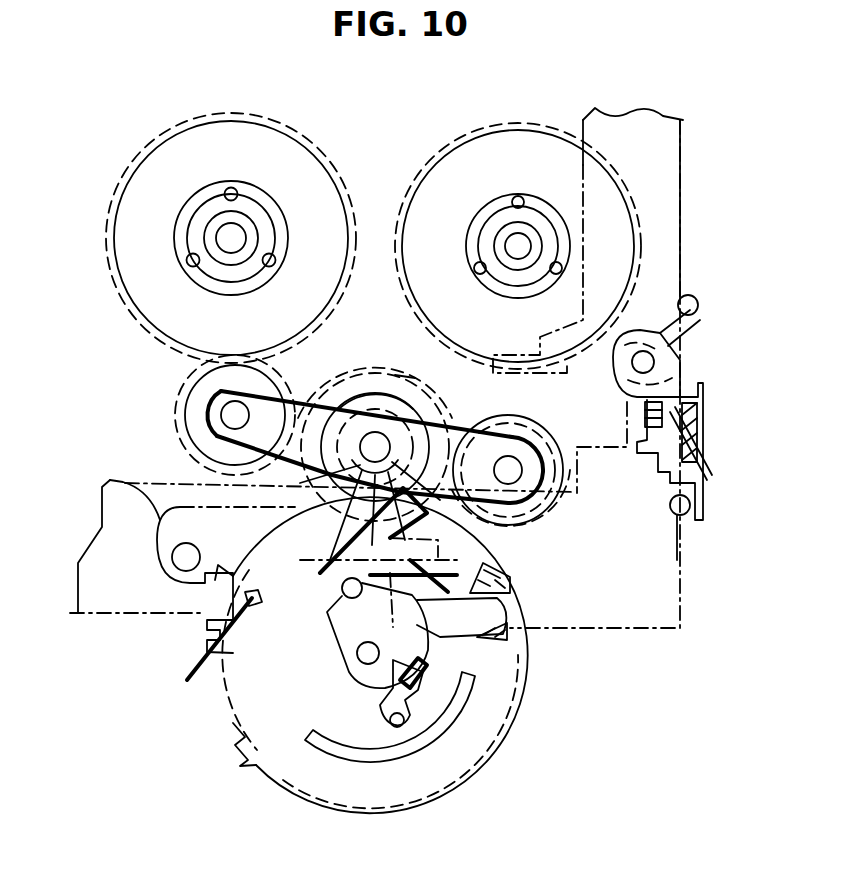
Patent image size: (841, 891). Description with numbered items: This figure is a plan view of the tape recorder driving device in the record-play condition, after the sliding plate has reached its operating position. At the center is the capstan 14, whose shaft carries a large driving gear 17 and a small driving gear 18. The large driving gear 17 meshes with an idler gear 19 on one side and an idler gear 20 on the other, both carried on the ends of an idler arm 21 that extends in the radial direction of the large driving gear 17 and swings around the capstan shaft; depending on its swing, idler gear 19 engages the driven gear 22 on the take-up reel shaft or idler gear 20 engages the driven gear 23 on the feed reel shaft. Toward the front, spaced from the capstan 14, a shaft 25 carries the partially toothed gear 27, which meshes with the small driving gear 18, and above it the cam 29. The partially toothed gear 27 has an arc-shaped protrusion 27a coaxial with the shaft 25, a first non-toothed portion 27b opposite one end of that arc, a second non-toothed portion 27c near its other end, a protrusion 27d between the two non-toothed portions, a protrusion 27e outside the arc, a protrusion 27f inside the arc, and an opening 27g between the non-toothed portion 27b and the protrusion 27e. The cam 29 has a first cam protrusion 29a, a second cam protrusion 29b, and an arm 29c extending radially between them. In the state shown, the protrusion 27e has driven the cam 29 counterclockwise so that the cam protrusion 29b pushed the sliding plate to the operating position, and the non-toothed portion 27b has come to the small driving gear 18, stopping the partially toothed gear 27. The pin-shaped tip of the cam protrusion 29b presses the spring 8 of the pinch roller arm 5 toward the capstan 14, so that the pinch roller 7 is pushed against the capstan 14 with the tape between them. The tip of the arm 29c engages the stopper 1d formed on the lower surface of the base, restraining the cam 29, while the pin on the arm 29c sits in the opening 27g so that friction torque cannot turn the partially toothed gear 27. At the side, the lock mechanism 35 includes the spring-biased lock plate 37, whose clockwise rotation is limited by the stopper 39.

The stopper 1d is at (517, 605).
The pinch roller arm 5 is at (130, 478).
The pinch roller 7 is at (500, 543).
The spring 8 is at (401, 614).
The capstan 14 is at (371, 432).
The large driving gear 17 is at (403, 377).
The small driving gear 18 is at (410, 412).
The idler gear 19 is at (190, 380).
The idler gear 20 is at (542, 430).
The idler arm 21 is at (330, 405).
The driven gear 22 is at (213, 142).
The driven gear 23 is at (535, 145).
The shaft 25 is at (357, 653).
The partially toothed gear 27 is at (453, 773).
The protrusion 27a is at (453, 713).
The non-toothed portion 27b is at (262, 528).
The second non-toothed portion 27c is at (233, 722).
The protrusion 27d is at (217, 653).
The protrusion 27e is at (490, 640).
The protrusion 27f is at (388, 687).
The opening 27g is at (513, 583).
The cam 29 is at (353, 672).
The 1st cam protrusion 29a is at (397, 727).
The 2nd cam protrusion 29b is at (343, 594).
The arm 29c is at (477, 637).
The lock mechanism 35 is at (731, 414).
The lock plate 37 is at (677, 360).
The stopper 39 is at (688, 515).